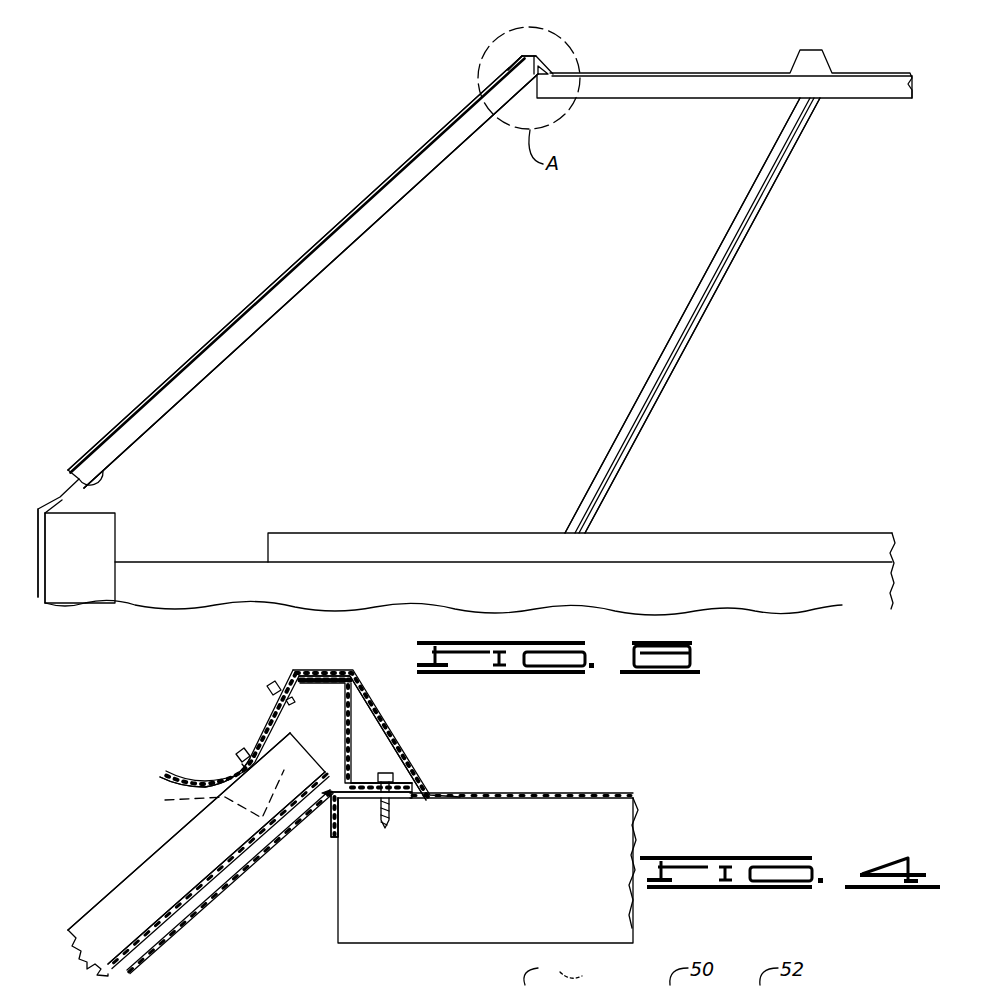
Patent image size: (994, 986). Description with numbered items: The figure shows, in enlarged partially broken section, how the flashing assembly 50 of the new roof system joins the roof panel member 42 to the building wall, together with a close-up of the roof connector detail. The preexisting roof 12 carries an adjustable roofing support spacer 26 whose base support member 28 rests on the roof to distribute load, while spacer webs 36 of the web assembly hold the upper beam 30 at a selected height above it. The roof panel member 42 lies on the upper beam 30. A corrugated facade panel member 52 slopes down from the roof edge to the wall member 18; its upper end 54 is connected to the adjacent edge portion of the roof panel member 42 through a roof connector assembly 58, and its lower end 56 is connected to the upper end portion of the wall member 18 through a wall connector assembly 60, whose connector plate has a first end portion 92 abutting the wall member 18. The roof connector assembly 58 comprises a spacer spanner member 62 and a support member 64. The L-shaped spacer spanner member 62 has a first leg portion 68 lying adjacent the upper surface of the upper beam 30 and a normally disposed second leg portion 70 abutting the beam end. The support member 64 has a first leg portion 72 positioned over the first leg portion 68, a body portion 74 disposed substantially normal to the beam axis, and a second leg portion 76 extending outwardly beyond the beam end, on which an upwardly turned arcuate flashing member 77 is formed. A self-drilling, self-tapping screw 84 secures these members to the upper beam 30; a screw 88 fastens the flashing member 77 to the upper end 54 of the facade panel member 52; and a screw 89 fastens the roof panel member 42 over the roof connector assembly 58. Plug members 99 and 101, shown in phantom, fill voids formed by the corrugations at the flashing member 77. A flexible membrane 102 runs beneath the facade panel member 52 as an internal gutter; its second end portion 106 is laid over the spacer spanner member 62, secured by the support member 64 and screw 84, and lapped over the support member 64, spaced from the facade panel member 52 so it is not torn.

In FIG. 3, the preexisting roof 12 is at (150, 598).
In FIG. 3, the wall member 18 is at (92, 564).
In FIG. 3, the adjustable roofing support spacer 26 is at (727, 300).
In FIG. 3, the base support member 28 is at (648, 533).
In FIG. 3, the upper beam 30 is at (605, 97).
In FIG. 4, the upper beam 30 is at (530, 884).
In FIG. 3, the spacer web 36 is at (690, 305).
In FIG. 3, the roof panel member 42 is at (687, 72).
In FIG. 4, the roof panel member 42 is at (552, 792).
In FIG. 3, the flashing assembly 50 is at (365, 176).
In FIG. 4, the flashing assembly 50 is at (150, 862).
In FIG. 3, the facade panel member 52 is at (420, 150).
In FIG. 4, the facade panel member 52 is at (150, 858).
In FIG. 3, the upper end 54 is at (492, 80).
In FIG. 4, the upper end 54 is at (299, 770).
In FIG. 3, the lower end 56 is at (165, 380).
In FIG. 4, the lower end 56 is at (544, 971).
In FIG. 3, the roof connector assembly 58 is at (548, 62).
In FIG. 4, the roof connector assembly 58 is at (250, 740).
In FIG. 3, the wall connector assembly 60 is at (55, 470).
In FIG. 4, the spacer spanner member 62 is at (343, 820).
In FIG. 4, the support member 64 is at (358, 740).
In FIG. 4, the first leg portion 68 is at (398, 800).
In FIG. 4, the second leg portion 70 is at (330, 835).
In FIG. 4, the first leg portion 72 is at (412, 786).
In FIG. 4, the body portion 74 is at (352, 778).
In FIG. 4, the second leg portion 76 is at (318, 671).
In FIG. 3, the flashing member 77 is at (500, 63).
In FIG. 4, the flashing member 77 is at (182, 780).
In FIG. 4, the self-drilling, self-tapping screw 84 is at (400, 768).
In FIG. 4, the self-drilling, self-tapping screw 88 is at (240, 758).
In FIG. 4, the self-tapping, self-drilling screw 89 is at (272, 690).
In FIG. 3, the first end portion 92 is at (35, 595).
In FIG. 4, the plug member 99 is at (186, 800).
In FIG. 4, the plug 101 is at (589, 973).
In FIG. 3, the flexible membrane 102 is at (368, 235).
In FIG. 4, the flexible membrane 102 is at (158, 958).
In FIG. 4, the second end portion 106 is at (366, 710).